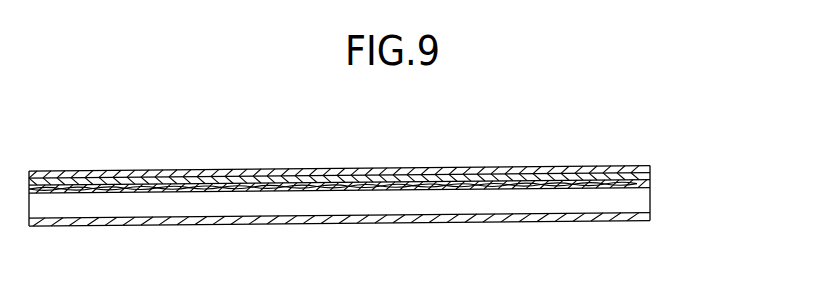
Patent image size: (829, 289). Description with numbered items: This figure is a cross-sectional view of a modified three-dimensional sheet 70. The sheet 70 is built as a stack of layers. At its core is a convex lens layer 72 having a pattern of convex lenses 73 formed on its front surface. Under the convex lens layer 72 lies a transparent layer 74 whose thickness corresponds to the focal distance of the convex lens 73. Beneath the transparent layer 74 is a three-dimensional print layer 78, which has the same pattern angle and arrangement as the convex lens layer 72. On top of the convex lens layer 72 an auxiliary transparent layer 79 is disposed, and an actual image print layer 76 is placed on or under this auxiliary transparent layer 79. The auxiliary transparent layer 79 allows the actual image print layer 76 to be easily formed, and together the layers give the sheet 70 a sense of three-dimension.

The 3D sheet 70 is at (397, 177).
The auxiliary transparent layer 79 is at (637, 167).
The actual image print layer 76 is at (646, 181).
The convex lens 73 is at (652, 184).
The convex lens layer 72 is at (652, 190).
The transparent layer 74 is at (645, 204).
The 3D print layer 78 is at (375, 238).